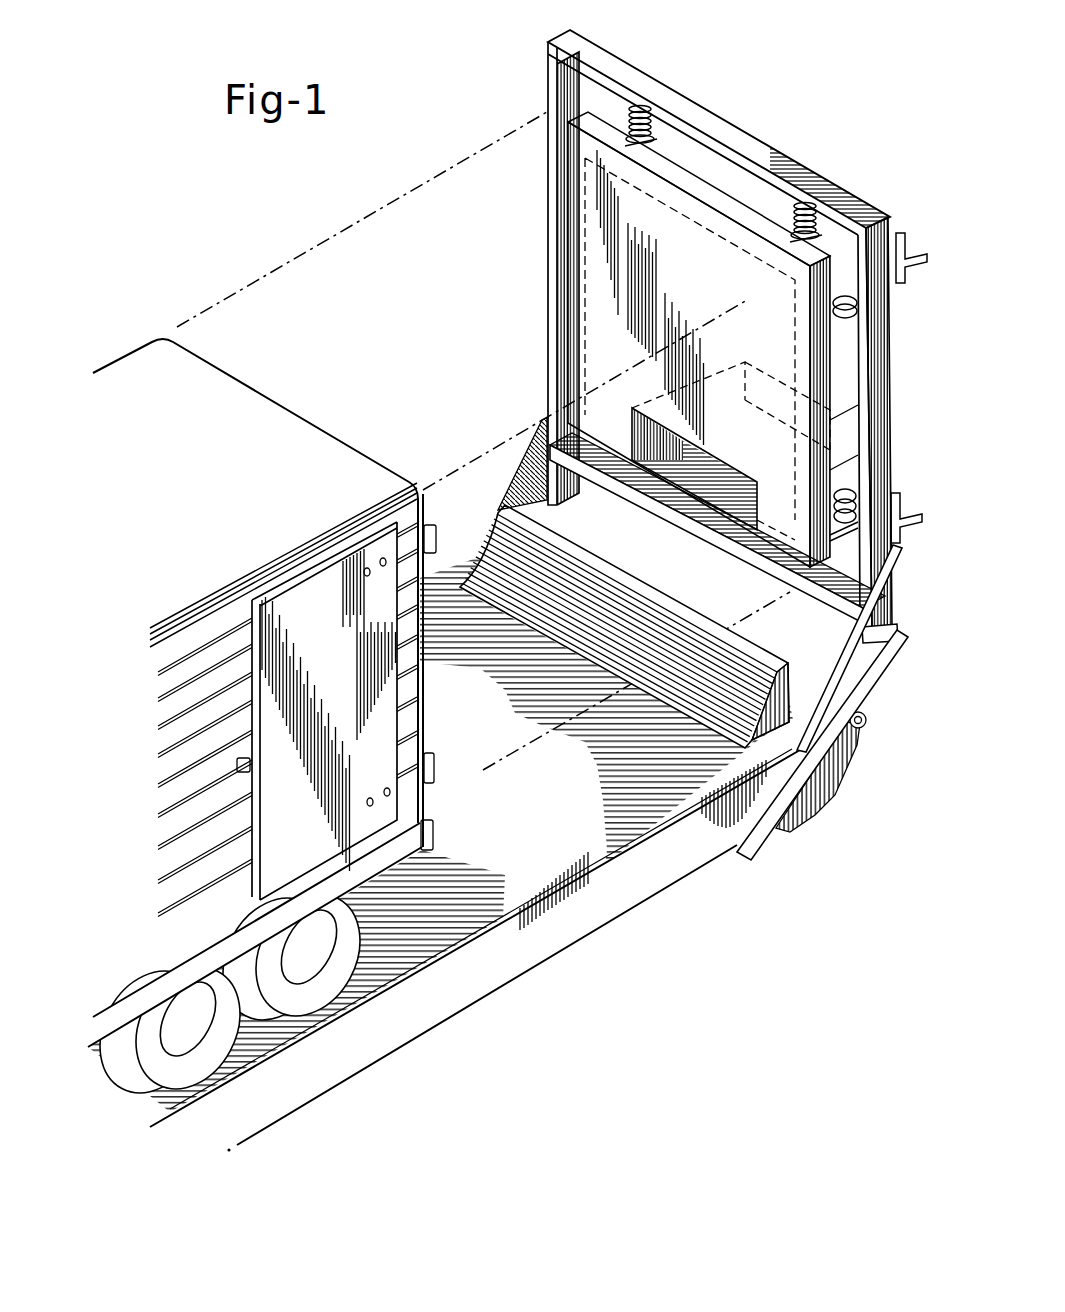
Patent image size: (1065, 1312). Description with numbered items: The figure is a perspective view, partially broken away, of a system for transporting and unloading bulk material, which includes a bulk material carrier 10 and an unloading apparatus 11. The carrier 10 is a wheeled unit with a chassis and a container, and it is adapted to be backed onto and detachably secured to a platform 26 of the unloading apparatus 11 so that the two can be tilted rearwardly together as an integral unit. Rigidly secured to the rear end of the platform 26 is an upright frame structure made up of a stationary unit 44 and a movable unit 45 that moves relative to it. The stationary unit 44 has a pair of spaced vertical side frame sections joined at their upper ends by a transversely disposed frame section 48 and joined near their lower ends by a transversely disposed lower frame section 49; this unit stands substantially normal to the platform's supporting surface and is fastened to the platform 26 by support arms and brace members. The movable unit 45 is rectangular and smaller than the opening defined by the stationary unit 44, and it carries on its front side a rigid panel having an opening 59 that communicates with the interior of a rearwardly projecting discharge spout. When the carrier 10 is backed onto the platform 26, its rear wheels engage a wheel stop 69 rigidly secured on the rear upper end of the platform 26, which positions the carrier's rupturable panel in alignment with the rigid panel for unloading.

The bulk material carrier 10 is at (282, 426).
The unloading apparatus 11 is at (703, 336).
The platform 26 is at (547, 950).
The stationary unit 44 is at (884, 381).
The movable unit 45 is at (567, 290).
The upper transversely disposed frame section 48 is at (767, 150).
The lower transversely disposed frame section 49 is at (705, 533).
The opening 59 is at (712, 470).
The wheel stop 69 is at (685, 609).